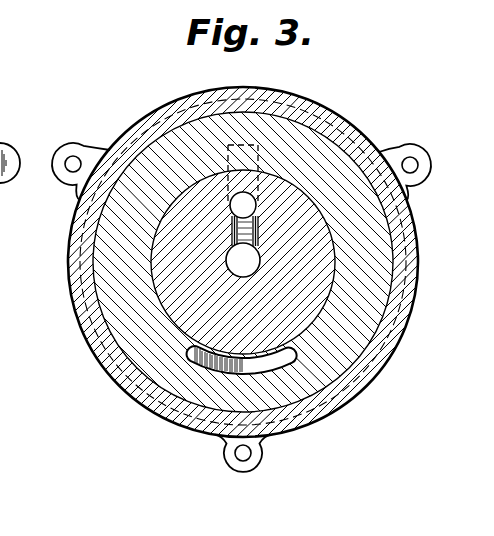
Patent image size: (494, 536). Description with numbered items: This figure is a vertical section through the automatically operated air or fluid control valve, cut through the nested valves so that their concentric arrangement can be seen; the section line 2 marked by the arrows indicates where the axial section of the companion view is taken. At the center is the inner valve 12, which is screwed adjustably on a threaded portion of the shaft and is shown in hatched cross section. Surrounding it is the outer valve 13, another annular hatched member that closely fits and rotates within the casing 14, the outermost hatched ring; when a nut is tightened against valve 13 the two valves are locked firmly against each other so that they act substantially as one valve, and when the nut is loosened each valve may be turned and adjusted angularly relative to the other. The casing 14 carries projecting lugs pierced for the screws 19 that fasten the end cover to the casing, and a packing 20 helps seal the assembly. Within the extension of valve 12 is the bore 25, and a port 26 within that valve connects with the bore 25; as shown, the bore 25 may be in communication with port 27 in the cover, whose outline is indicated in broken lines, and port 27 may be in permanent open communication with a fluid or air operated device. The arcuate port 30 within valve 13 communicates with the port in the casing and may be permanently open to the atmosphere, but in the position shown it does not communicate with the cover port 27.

The valve 12 is at (185, 296).
The valve 13 is at (147, 318).
The casing 14 is at (344, 137).
The screws 19 is at (72, 163).
The packing 20 is at (385, 146).
The bore 25 is at (239, 256).
The port 26 is at (241, 207).
The port 27 is at (296, 135).
The port 30 is at (198, 372).
The section line 2— 2 is at (224, 70).